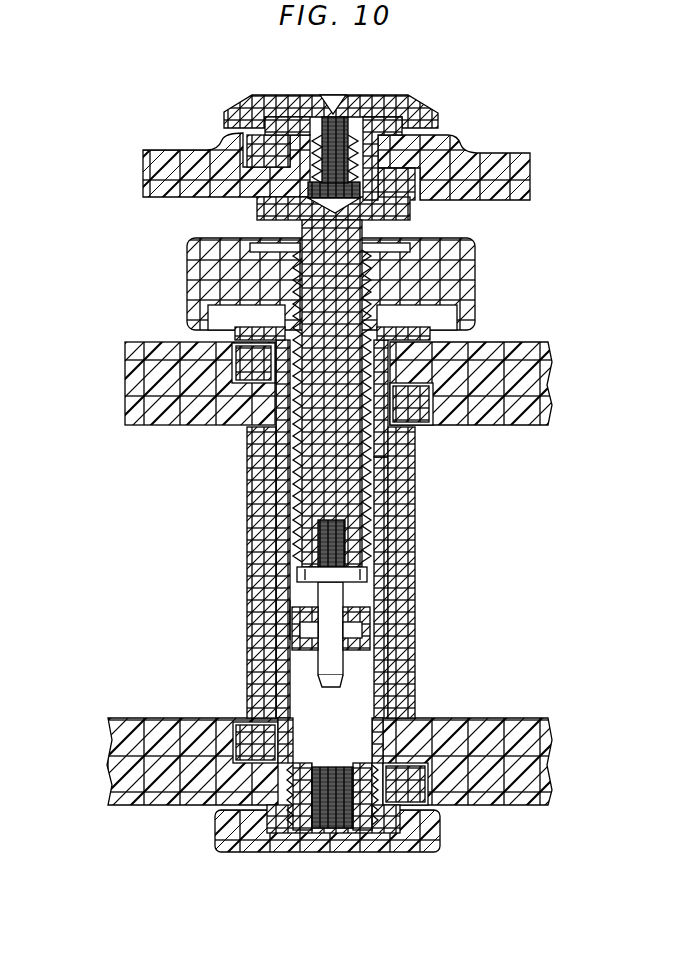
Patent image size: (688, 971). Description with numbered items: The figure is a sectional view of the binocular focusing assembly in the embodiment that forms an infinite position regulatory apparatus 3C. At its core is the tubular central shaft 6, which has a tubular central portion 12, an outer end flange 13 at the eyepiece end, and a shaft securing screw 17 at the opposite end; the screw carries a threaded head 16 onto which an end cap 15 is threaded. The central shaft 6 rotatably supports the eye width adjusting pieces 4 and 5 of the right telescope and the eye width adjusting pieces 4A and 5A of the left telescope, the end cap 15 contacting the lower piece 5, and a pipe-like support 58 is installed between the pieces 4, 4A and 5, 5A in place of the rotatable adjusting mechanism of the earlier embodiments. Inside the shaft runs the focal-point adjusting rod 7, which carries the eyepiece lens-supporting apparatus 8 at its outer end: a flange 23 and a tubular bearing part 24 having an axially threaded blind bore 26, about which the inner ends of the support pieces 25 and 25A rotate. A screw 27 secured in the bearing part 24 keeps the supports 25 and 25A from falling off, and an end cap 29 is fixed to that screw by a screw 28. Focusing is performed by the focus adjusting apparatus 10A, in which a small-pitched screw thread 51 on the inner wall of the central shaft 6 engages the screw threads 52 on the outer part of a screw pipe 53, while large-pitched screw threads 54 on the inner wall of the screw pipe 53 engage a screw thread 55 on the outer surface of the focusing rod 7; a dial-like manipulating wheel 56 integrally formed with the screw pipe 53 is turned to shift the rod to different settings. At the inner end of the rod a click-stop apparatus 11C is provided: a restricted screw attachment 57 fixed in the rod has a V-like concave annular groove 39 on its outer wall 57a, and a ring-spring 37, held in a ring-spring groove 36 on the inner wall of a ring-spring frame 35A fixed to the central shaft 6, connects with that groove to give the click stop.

The infinite position regulatory apparatus 3C is at (333, 117).
The end cap 29 is at (236, 108).
The screw 27 is at (280, 116).
The screw 28 is at (322, 104).
The axially threaded blind bore 26 is at (357, 150).
The tubular bearing part 24 is at (369, 152).
The eyepiece lens-supporting apparatus 8 is at (340, 135).
The support piece 25 is at (150, 173).
The support piece 25A is at (514, 177).
The flange 23 is at (262, 212).
The dial-like manipulating wheel 56 is at (468, 263).
The outer end flange 13 is at (400, 313).
The screw thread 55 is at (378, 357).
The large-pitched screw threads 54 is at (387, 378).
The eye width adjusting piece 4 is at (138, 380).
The eye width adjusting piece 4A is at (553, 387).
The focus adjusting apparatus 10A is at (287, 595).
The screw threads 52 is at (386, 433).
The small-pitched screw thread 51 is at (380, 462).
The screw pipe 53 is at (348, 494).
The focal-point adjusting rod 7 is at (415, 393).
The tubular central shaft 6 is at (410, 613).
The restricted screw attachment 57 is at (272, 573).
The outer wall 57a is at (350, 597).
The ring-spring frame 35A is at (400, 640).
The click-stop apparatus 11C is at (292, 620).
The ring-spring groove 36 is at (364, 628).
The pipe-like support 58 is at (252, 660).
The ring-spring 37 is at (364, 651).
The V-like concave annular groove 39 is at (356, 656).
The tubular central portion 12 is at (282, 702).
The eye width adjusting piece 5 is at (116, 766).
The eye width adjusting piece 5A is at (520, 766).
The end cap 15 is at (237, 842).
The threaded head 16 is at (290, 822).
The shaft securing screw 17 is at (368, 802).